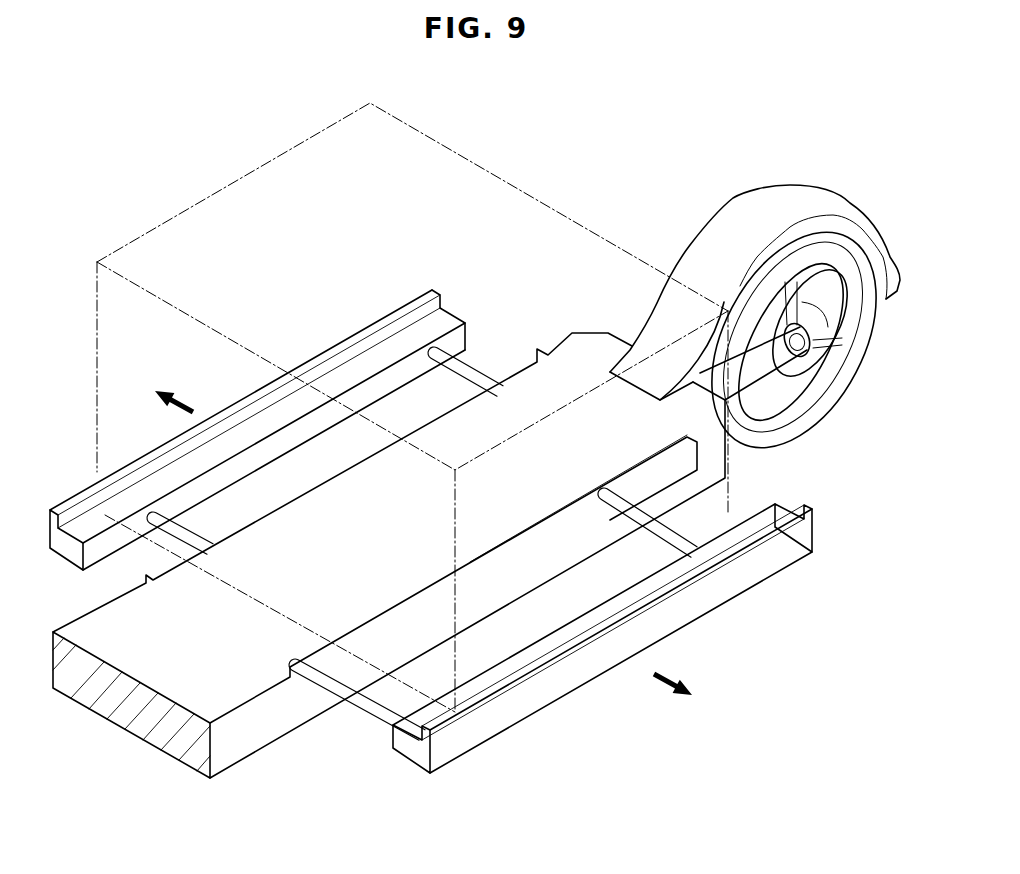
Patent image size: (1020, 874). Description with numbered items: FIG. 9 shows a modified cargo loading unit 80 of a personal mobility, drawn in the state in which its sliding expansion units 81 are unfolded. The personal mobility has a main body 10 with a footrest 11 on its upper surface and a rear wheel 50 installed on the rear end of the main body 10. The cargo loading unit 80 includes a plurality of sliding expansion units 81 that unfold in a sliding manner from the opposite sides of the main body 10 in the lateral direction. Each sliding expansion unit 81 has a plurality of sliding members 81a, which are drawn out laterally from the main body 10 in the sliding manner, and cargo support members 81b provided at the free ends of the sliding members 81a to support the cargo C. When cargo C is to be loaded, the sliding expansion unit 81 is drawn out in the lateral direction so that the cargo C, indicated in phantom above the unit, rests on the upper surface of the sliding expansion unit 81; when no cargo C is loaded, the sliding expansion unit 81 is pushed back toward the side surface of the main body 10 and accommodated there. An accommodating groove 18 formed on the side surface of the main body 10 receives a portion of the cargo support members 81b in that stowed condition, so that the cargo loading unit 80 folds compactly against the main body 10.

The cargo C is at (444, 147).
The main body 10 is at (236, 787).
The footrest 11 is at (150, 663).
The accommodating groove 18 is at (522, 558).
The rear wheel 50 is at (845, 378).
The cargo loading unit 80 is at (428, 552).
The sliding expansion unit 81 is at (376, 305).
The sliding member 81a is at (190, 537).
The cargo support member 81b is at (82, 525).